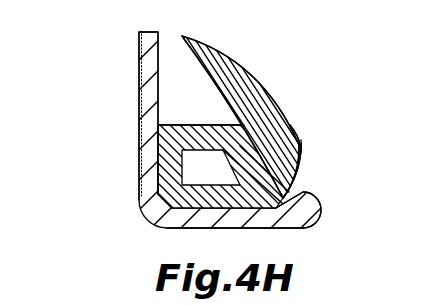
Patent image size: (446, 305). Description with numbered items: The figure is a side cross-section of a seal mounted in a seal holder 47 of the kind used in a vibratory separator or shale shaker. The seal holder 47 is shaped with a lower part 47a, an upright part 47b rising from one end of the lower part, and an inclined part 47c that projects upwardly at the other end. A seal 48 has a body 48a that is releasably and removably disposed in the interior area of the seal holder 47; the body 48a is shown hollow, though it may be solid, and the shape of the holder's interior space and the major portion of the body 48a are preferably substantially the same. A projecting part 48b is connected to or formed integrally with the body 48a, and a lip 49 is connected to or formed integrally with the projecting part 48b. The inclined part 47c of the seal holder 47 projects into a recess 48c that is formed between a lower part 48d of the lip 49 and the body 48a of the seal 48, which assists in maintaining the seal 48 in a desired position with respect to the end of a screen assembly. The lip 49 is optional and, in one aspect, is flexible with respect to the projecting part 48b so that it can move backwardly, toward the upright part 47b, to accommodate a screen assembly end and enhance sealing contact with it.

The seal holder 47 is at (132, 107).
The lower part 47a is at (201, 228).
The upright part 47b is at (147, 53).
The inclined part 47c is at (292, 187).
The seal 48 is at (276, 98).
The body 48a is at (160, 143).
The projecting part 48b is at (195, 128).
The recess 48c is at (298, 133).
The lower part of the lip 48d is at (302, 141).
The lip 49 is at (204, 42).